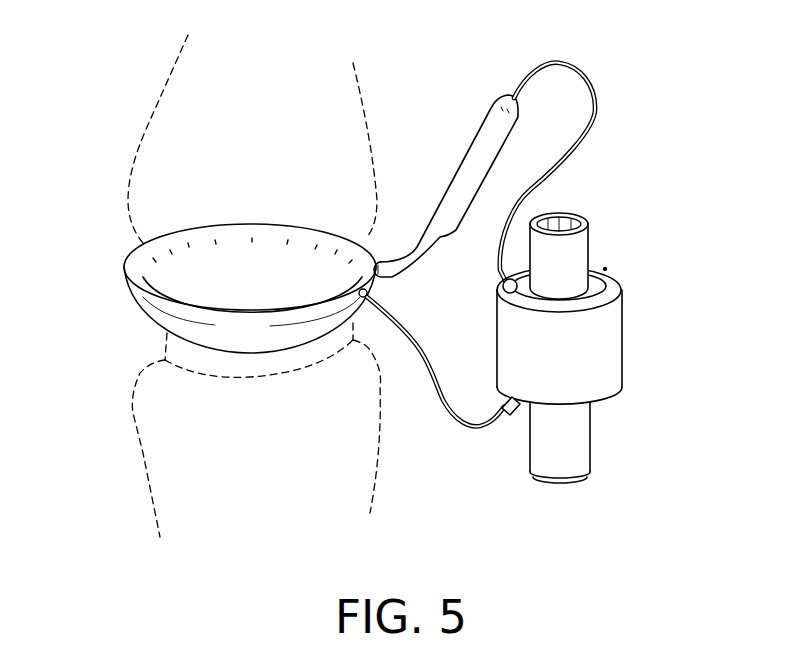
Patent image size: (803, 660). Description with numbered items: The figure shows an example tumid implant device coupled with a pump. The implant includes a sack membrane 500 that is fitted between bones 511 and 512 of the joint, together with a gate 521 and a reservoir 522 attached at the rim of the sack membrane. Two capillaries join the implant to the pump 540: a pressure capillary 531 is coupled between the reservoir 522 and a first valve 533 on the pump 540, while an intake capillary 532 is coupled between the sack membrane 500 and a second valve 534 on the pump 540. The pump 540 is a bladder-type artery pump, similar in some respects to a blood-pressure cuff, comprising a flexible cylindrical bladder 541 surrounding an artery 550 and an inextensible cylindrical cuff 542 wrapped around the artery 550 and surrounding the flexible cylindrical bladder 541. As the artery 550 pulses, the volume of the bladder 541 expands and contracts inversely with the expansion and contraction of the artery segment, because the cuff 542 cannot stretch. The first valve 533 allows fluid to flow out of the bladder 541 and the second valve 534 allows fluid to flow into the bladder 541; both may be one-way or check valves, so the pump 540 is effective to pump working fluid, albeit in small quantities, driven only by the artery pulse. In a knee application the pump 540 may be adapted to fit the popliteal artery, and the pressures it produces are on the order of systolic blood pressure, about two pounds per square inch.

The sack membrane 500 is at (121, 292).
The bone 511 is at (188, 100).
The bone 512 is at (177, 455).
The gate 521 is at (386, 254).
The reservoir 522 is at (481, 116).
The pressure capillary 531 is at (598, 98).
The intake capillary 532 is at (463, 440).
The first valve 533 is at (512, 305).
The second valve 534 is at (507, 431).
The pump 540 is at (635, 274).
The flexible cylindrical bladder 541 is at (607, 268).
The inextensible cylindrical cuff 542 is at (605, 337).
The artery 550 is at (591, 212).